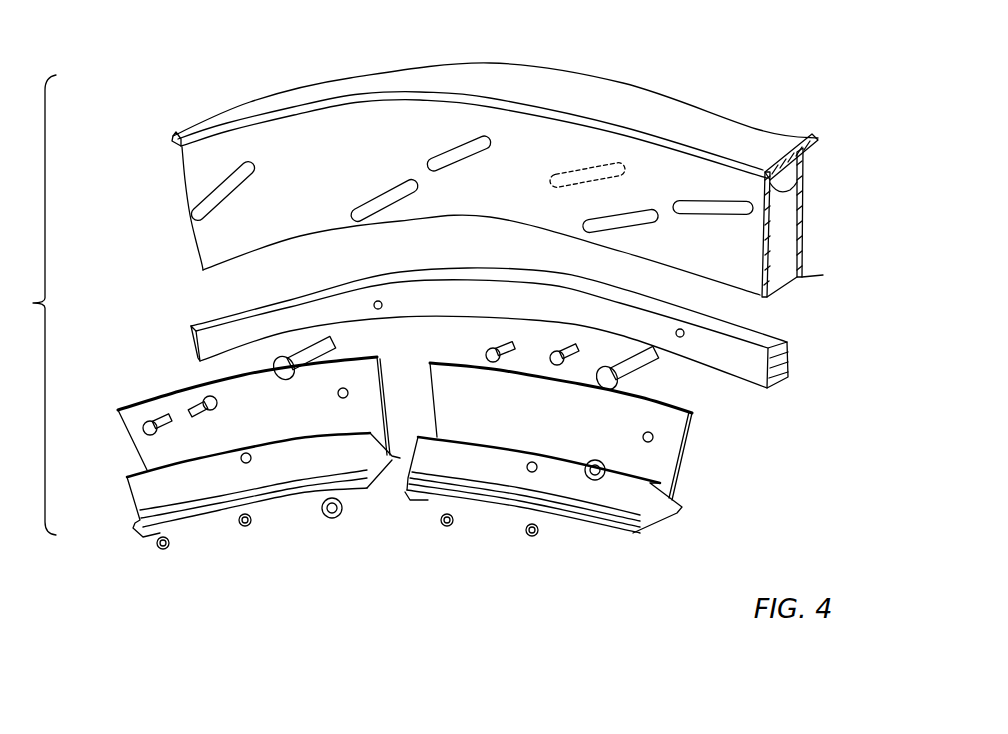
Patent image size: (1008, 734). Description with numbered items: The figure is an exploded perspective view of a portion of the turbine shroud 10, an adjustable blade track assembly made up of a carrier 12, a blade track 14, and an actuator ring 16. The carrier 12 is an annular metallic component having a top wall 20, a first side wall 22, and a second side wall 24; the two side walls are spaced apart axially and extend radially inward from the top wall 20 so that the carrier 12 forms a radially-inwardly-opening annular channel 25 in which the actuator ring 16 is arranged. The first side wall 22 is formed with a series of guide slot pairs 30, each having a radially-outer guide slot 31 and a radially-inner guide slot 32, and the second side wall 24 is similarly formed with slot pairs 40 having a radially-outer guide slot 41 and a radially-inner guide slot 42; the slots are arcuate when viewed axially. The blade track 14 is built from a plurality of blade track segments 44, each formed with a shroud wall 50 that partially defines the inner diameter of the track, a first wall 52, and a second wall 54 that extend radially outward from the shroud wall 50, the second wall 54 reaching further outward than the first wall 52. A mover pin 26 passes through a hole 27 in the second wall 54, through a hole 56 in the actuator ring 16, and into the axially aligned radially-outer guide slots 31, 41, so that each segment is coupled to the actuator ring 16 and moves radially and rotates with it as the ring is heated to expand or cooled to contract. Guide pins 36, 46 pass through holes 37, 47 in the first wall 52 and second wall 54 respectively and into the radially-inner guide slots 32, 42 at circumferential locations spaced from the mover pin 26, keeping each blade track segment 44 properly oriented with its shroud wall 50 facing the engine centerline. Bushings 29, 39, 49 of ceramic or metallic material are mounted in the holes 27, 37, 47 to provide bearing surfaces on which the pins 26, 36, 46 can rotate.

The turbine shroud 10 is at (822, 60).
The carrier 12 is at (495, 151).
The blade track 14 is at (412, 447).
The actuator ring 16 is at (512, 328).
The top wall 20 is at (653, 124).
The first side wall 22 is at (478, 200).
The second side wall 24 is at (823, 275).
The channel 25 is at (775, 290).
The mover pin 26 is at (360, 348).
The hole 27 is at (338, 396).
The bushing 29 is at (333, 520).
The guide slot pair 30 is at (471, 191).
The radially-outer guide slot 31 is at (222, 192).
The radially-inner guide slot 32 is at (382, 202).
The guide pin 36 is at (200, 397).
The hole 37 is at (243, 463).
The bushing 39 is at (247, 528).
The slot pair 40 is at (804, 188).
The radially-outer guide slot 41 is at (776, 208).
The radially-inner guide slot 42 is at (583, 170).
The blade track segment 44 is at (278, 510).
The guide pin 46 is at (148, 418).
The hole 47 is at (148, 466).
The bushing 49 is at (157, 548).
The shroud wall 50 is at (140, 535).
The first wall 52 is at (140, 500).
The second wall 54 is at (133, 415).
The hole 56 is at (373, 306).